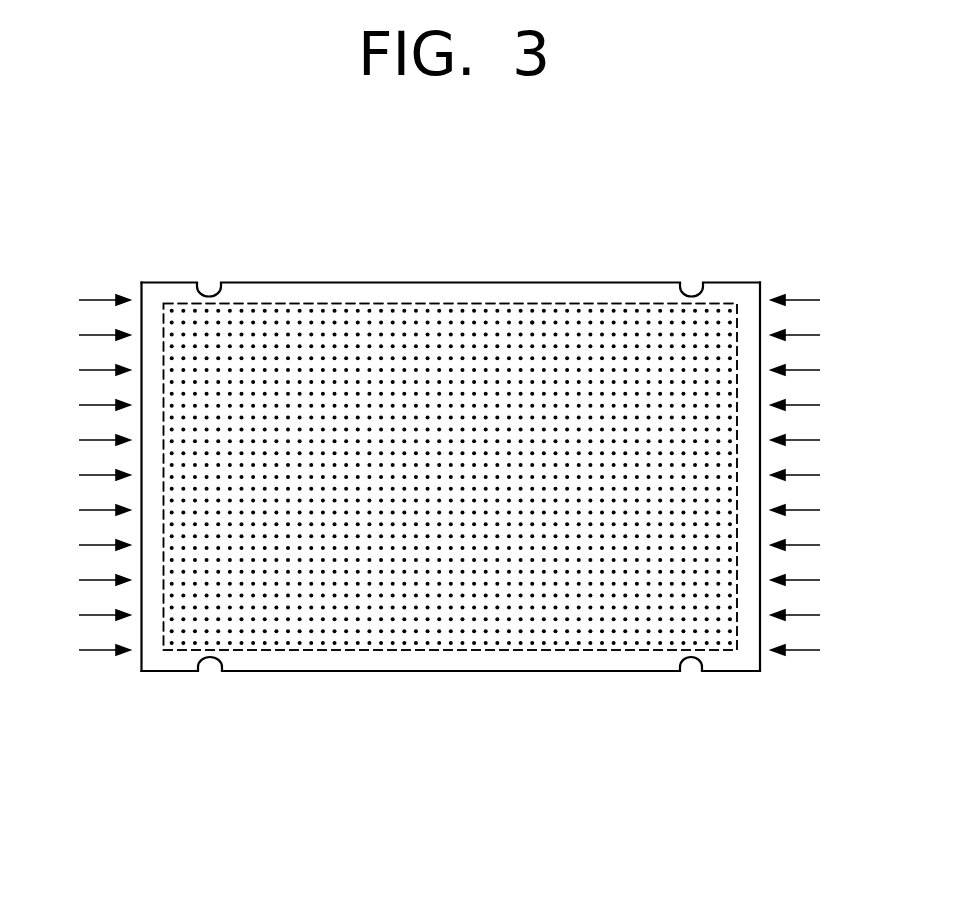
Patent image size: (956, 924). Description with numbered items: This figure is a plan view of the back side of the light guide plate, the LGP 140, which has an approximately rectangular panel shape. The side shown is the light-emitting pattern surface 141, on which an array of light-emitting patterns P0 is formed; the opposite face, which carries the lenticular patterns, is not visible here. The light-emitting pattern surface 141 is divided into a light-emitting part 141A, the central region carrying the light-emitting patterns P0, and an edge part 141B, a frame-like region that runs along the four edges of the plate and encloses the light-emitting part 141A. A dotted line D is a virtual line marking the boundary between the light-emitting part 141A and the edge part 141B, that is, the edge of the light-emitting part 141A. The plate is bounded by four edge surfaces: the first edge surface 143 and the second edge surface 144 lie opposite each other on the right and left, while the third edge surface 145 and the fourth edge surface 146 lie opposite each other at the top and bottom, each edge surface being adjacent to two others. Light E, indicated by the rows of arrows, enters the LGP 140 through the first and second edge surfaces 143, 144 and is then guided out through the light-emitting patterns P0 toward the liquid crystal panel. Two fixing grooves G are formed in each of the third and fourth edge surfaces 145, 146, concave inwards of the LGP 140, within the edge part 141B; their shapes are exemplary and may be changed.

The LGP 140 is at (487, 177).
The light-emitting pattern surface 141 is at (451, 505).
The light-emitting part 141A is at (343, 628).
The edge part 141B is at (400, 663).
The first edge surface 143 is at (760, 293).
The second edge surface 144 is at (140, 292).
The third edge surface 145 is at (426, 282).
The fourth edge surface 146 is at (462, 672).
The fixing grooves G is at (209, 288).
The dotted line D is at (254, 305).
The light-emitting patterns P0 is at (530, 330).
The light E is at (95, 404).